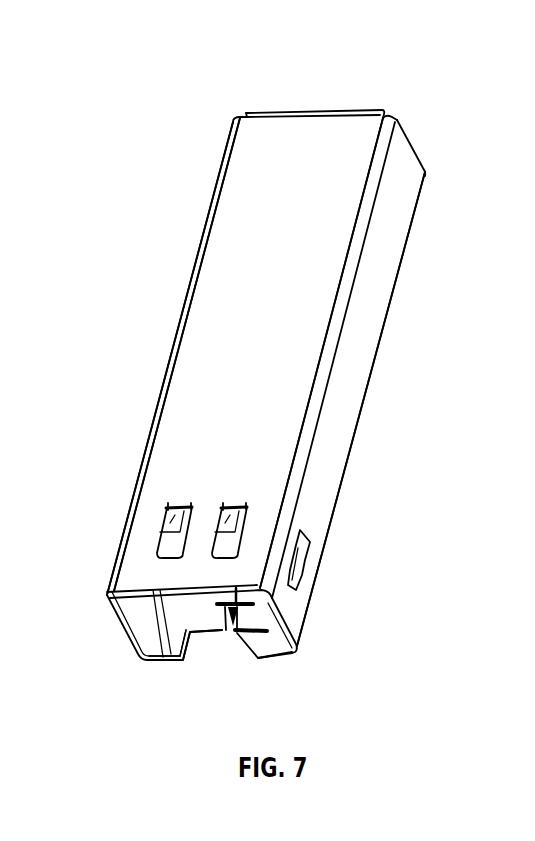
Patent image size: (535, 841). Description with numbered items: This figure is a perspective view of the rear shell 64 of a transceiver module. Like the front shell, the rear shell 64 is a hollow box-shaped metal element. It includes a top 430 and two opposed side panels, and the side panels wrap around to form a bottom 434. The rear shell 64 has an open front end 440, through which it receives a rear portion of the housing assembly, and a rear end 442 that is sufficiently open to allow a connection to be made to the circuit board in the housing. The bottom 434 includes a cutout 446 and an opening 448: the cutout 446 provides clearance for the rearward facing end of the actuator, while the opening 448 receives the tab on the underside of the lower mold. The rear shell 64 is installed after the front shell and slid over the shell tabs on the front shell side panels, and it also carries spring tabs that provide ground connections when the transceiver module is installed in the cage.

The rear shell 64 is at (181, 214).
The top 430 is at (283, 316).
The bottom 434 is at (290, 640).
The open front end 440 is at (119, 666).
The rear end 442 is at (322, 93).
The cutout 446 is at (207, 642).
The opening 448 is at (259, 656).